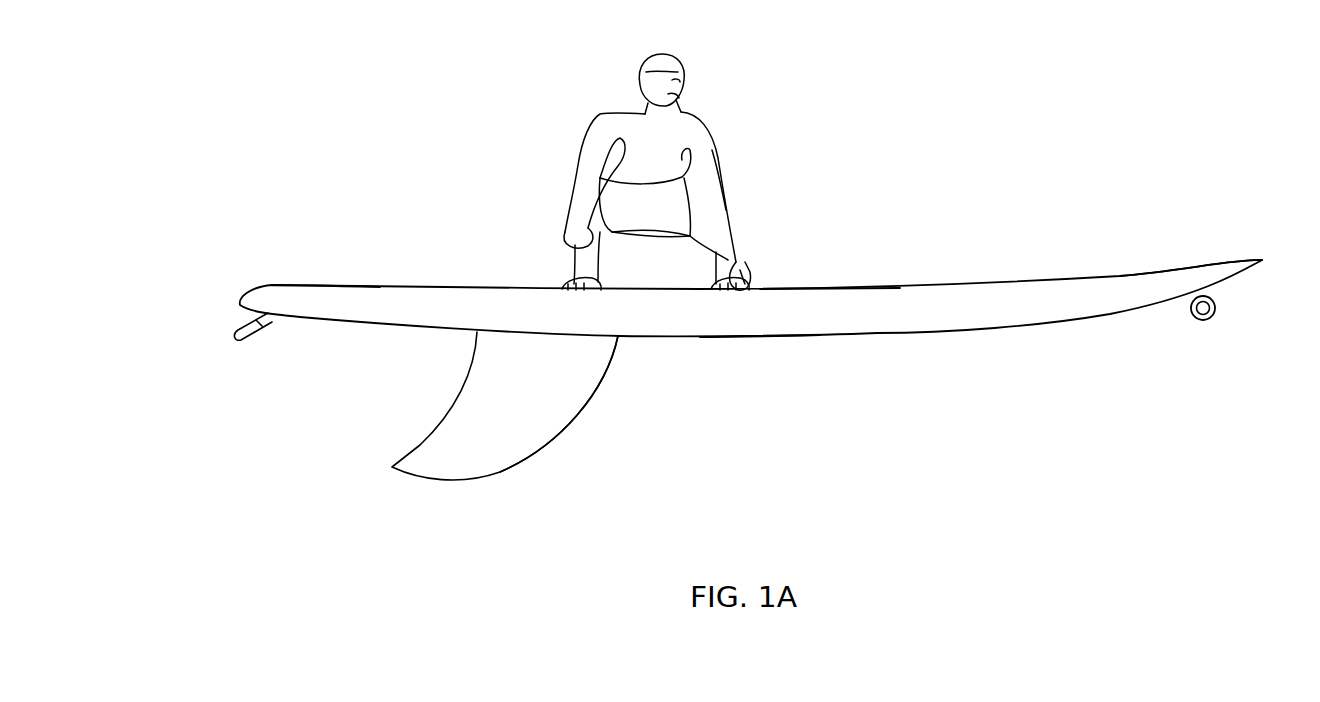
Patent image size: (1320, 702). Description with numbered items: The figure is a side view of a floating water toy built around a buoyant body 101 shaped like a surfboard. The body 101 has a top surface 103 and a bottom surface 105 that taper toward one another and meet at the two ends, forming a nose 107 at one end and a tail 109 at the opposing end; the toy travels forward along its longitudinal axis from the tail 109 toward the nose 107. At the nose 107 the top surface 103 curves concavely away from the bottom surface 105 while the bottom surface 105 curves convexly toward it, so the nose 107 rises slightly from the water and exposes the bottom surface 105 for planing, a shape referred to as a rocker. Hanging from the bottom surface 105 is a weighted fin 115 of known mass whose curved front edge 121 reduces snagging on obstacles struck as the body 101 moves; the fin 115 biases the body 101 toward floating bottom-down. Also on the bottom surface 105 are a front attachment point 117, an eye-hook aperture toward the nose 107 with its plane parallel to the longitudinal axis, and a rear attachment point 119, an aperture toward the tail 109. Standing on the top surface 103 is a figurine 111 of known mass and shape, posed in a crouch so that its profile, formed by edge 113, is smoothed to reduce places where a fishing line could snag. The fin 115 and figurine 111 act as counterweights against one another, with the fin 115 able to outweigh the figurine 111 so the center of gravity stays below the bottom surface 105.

The body 101 is at (678, 326).
The top surface 103 is at (877, 288).
The bottom surface 105 is at (740, 335).
The nose 107 is at (1125, 285).
The tail 109 is at (343, 296).
The figurine 111 is at (643, 147).
The edge 113 is at (725, 187).
The fin 115 is at (433, 458).
The front attachment point 117 is at (1195, 318).
The rear attachment point 119 is at (245, 328).
The front edge 121 is at (557, 435).